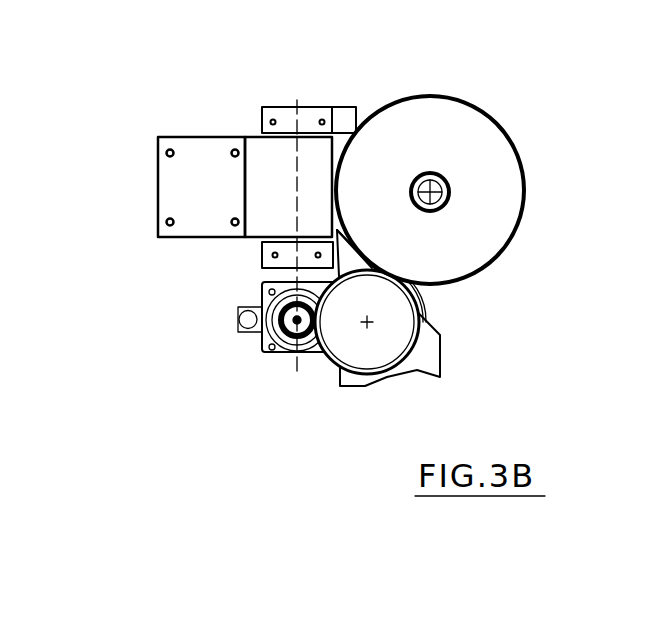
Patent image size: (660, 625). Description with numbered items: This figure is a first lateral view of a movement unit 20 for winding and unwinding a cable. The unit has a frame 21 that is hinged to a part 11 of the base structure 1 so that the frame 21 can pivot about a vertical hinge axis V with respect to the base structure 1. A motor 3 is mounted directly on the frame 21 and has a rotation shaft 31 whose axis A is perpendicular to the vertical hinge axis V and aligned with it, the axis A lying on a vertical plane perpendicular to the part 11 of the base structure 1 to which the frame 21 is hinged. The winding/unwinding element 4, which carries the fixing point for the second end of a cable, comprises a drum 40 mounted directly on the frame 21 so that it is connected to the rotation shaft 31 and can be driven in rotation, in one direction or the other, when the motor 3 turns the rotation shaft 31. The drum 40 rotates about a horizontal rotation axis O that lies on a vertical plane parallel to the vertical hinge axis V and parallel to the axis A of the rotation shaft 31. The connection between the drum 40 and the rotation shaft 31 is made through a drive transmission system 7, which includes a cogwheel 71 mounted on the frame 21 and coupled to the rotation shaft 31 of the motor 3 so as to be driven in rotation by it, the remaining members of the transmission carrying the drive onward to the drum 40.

The base structure 1 is at (150, 133).
The part of the base structure 11 is at (258, 145).
The frame 21 is at (350, 115).
The motor 3 is at (265, 361).
The rotation shaft 31 is at (268, 352).
The winding/unwinding element 4 is at (454, 168).
The drum 40 is at (483, 197).
The horizontal rotation axis O is at (402, 130).
The movement unit 20 is at (473, 329).
The drive transmission system 7 is at (430, 353).
The cogwheel 71 is at (357, 352).
The axis of the rotation shaft A is at (290, 358).
The vertical hinge axis V is at (294, 122).